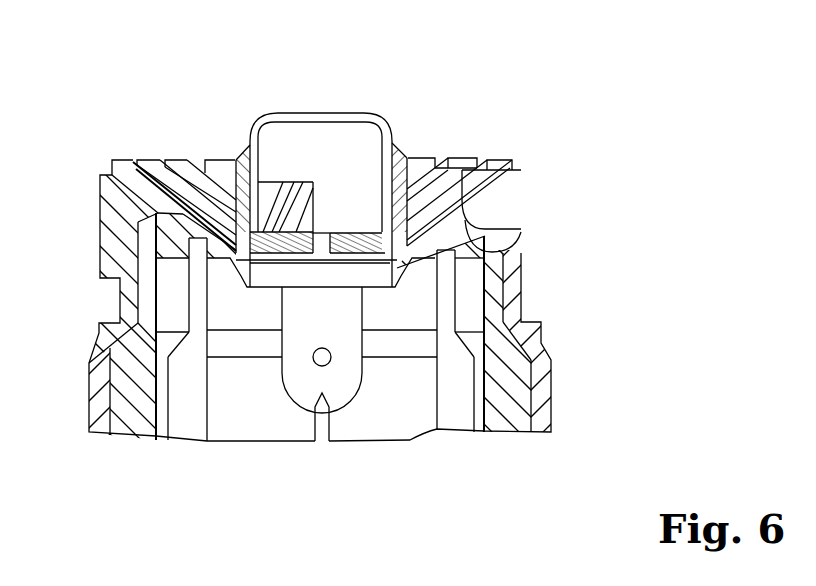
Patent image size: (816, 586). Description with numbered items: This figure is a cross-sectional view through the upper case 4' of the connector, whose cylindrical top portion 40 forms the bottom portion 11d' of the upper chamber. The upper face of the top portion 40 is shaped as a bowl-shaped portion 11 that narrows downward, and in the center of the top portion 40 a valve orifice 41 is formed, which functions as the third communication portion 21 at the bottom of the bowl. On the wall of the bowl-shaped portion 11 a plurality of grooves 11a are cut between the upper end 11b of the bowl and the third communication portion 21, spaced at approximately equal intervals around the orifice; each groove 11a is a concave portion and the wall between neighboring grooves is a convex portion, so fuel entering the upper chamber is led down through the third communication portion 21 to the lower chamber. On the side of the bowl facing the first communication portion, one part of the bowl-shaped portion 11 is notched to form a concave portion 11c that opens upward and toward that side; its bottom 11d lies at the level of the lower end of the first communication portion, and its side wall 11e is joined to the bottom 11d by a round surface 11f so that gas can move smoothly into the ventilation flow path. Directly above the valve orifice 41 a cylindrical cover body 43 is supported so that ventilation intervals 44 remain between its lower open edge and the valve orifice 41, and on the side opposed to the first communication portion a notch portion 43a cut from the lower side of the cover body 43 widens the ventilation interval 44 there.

The upper case 4' is at (408, 293).
The bowl-shaped portion 11 is at (415, 160).
The groove 11a is at (172, 160).
The upper end of the bowl-shaped portion 11b is at (120, 160).
The concave portion 11c is at (510, 210).
The bottom of the concave portion 11d is at (515, 334).
The bottom portion of the upper chamber 11d' is at (134, 326).
The side wall of the concave portion 11e is at (503, 190).
The round surface 11f is at (515, 240).
The third communication portion 21 is at (272, 282).
The top portion 40 is at (243, 158).
The valve orifice 41 is at (373, 282).
The cover body 43 is at (290, 114).
The notch portion 43a is at (297, 187).
The ventilation interval 44 is at (345, 232).